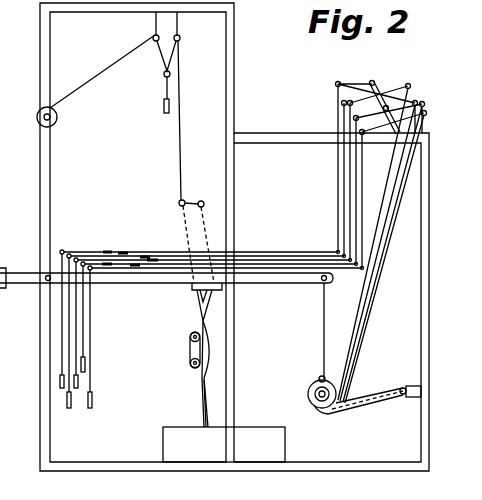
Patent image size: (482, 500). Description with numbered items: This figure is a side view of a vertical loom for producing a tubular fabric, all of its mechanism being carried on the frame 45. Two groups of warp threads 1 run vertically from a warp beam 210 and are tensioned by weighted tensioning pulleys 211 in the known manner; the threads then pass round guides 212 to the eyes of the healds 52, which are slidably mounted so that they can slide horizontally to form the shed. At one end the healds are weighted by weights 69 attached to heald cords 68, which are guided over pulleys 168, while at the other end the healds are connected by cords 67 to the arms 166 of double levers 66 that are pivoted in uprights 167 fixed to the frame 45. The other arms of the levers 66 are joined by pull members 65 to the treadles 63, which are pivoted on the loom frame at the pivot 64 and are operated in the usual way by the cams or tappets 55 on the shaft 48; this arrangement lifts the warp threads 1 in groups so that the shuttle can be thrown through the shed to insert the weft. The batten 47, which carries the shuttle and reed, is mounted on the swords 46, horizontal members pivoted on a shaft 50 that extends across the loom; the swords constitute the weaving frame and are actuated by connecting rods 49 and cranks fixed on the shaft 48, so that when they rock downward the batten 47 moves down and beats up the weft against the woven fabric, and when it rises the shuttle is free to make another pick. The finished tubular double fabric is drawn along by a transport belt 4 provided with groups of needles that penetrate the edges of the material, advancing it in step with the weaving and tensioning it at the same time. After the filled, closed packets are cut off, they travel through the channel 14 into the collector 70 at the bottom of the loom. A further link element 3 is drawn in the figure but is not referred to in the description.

The frame 45 is at (47, 63).
The shaft 50 is at (46, 276).
The warp beam 210 is at (58, 117).
The weighted tensioning pulleys 211 is at (152, 44).
The warp threads 1 is at (179, 100).
The guides 212 is at (204, 200).
The batten 47 is at (193, 287).
The link 3 is at (203, 368).
The transport belt 4 is at (190, 352).
The channel 14 is at (200, 400).
The collector 70 is at (163, 443).
The pulleys 168 is at (72, 256).
The healds 52 is at (108, 253).
The heald cords 68 is at (84, 321).
The weights 69 is at (91, 398).
The cords 67 is at (356, 194).
The arms 166 is at (352, 76).
The double levers 66 is at (390, 90).
The uprights 167 is at (422, 79).
The pull members 65 is at (373, 276).
The swords 46 is at (283, 284).
The connecting rods 49 is at (323, 347).
The shaft 48 is at (316, 393).
The cams or tappets 55 is at (327, 412).
The treadles 63 is at (368, 405).
The pivot 64 is at (403, 388).